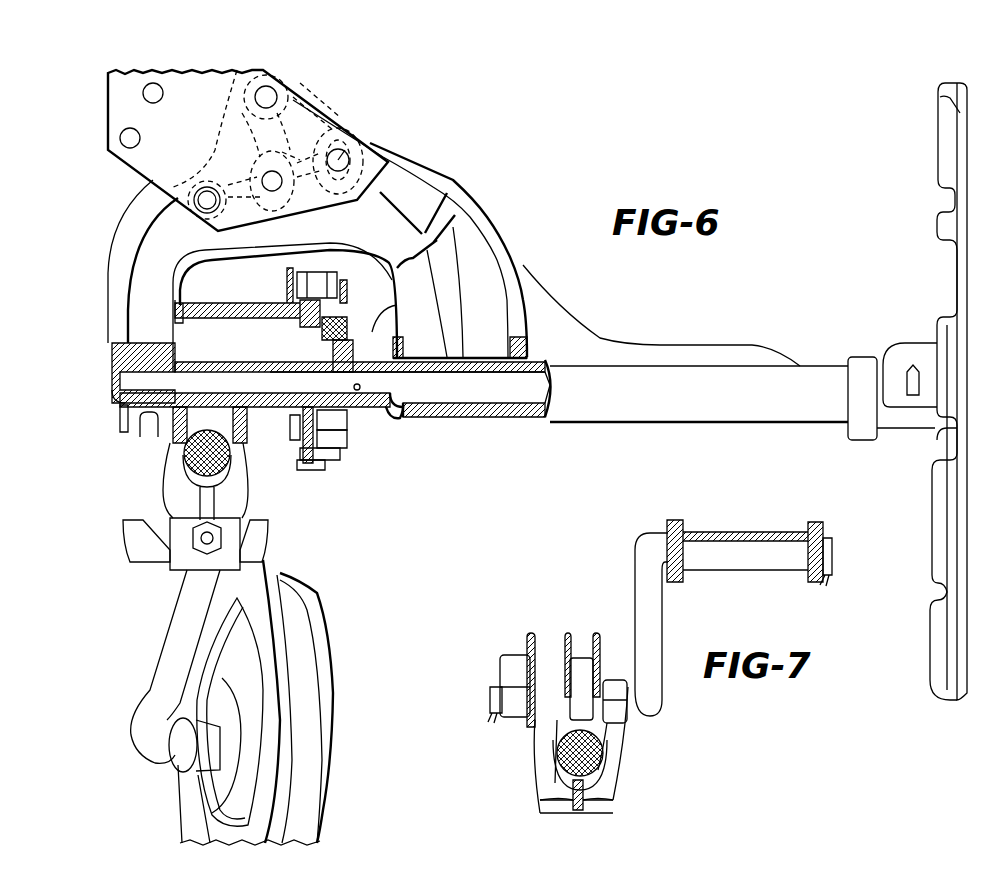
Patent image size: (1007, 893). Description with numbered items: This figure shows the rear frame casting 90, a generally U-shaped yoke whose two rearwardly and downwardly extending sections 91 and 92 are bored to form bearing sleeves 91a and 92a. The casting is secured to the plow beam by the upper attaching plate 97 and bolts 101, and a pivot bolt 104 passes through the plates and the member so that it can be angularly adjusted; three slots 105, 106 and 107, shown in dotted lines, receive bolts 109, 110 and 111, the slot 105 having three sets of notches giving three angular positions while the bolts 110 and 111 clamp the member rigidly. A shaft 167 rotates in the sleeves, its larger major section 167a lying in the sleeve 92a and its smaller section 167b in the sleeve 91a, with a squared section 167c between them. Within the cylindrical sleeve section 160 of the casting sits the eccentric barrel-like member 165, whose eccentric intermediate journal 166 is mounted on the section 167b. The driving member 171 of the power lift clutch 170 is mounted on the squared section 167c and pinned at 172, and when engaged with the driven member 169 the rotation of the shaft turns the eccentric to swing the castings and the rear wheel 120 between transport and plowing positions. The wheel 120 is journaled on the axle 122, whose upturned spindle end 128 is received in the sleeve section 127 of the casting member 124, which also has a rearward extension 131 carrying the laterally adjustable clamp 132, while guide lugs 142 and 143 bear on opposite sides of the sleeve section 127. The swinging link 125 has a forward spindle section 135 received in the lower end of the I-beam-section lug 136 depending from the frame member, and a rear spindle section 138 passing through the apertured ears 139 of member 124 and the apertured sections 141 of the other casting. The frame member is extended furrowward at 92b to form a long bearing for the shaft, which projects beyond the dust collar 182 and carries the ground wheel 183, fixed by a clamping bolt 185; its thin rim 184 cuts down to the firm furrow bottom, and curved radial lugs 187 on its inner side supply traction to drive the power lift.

In FIG. 6, the rear frame casting 90 is at (464, 176).
In FIG. 6, the yoke section 91 is at (115, 372).
In FIG. 6, the bearing sleeve 91a is at (118, 394).
In FIG. 6, the yoke section 92 is at (650, 408).
In FIG. 6, the bearing sleeve 92a is at (430, 400).
In FIG. 6, the furrowward extension 92b is at (803, 382).
In FIG. 6, the upper attaching plate 97 is at (150, 160).
In FIG. 6, the bolts 101 is at (128, 136).
In FIG. 6, the pivot bolt 104 is at (207, 202).
In FIG. 6, the slot 105 is at (312, 99).
In FIG. 6, the slot 106 is at (296, 146).
In FIG. 6, the slot 107 is at (335, 153).
In FIG. 6, the bolt 109 is at (268, 95).
In FIG. 6, the bolt 110 is at (268, 180).
In FIG. 6, the bolt 111 is at (345, 158).
In FIG. 6, the rear wheel 120 is at (308, 640).
In FIG. 6, the axle 122 is at (168, 624).
In FIG. 6, the casting member 124 is at (157, 505).
In FIG. 7, the casting member 124 is at (531, 784).
In FIG. 7, the swinging link 125 is at (626, 604).
In FIG. 6, the sleeve section 127 is at (223, 482).
In FIG. 7, the sleeve section 127 is at (595, 768).
In FIG. 6, the spindle end 128 is at (185, 460).
In FIG. 7, the spindle end 128 is at (590, 752).
In FIG. 6, the rearwardly directed extension 131 is at (230, 530).
In FIG. 7, the rearwardly directed extension 131 is at (605, 808).
In FIG. 6, the laterally adjustable clamp 132 is at (148, 547).
In FIG. 7, the forward spindle section 135 is at (830, 556).
In FIG. 7, the lug 136 is at (775, 522).
In FIG. 7, the rear spindle section 138 is at (492, 700).
In FIG. 7, the apertured ears 139 is at (545, 685).
In FIG. 7, the apertured sections 141 is at (513, 655).
In FIG. 6, the guide lug 142 is at (165, 455).
In FIG. 6, the guide lug 143 is at (243, 465).
In FIG. 6, the sleeve section 160 is at (213, 303).
In FIG. 6, the eccentric barrel-like member 165 is at (172, 327).
In FIG. 6, the intermediate journal 166 is at (243, 362).
In FIG. 6, the shaft 167 is at (490, 419).
In FIG. 6, the major shaft section 167a is at (517, 383).
In FIG. 6, the shaft section 167b is at (270, 380).
In FIG. 6, the squared section 167c is at (353, 423).
In FIG. 6, the driven member 169 is at (317, 465).
In FIG. 6, the power lift clutch 170 is at (364, 455).
In FIG. 6, the driving member 171 is at (367, 327).
In FIG. 6, the pin 172 is at (352, 387).
In FIG. 6, the dust collar 182 is at (862, 367).
In FIG. 6, the ground wheel 183 is at (926, 199).
In FIG. 6, the rim 184 is at (955, 262).
In FIG. 6, the clamping bolt 185 is at (912, 370).
In FIG. 6, the lugs 187 is at (935, 227).